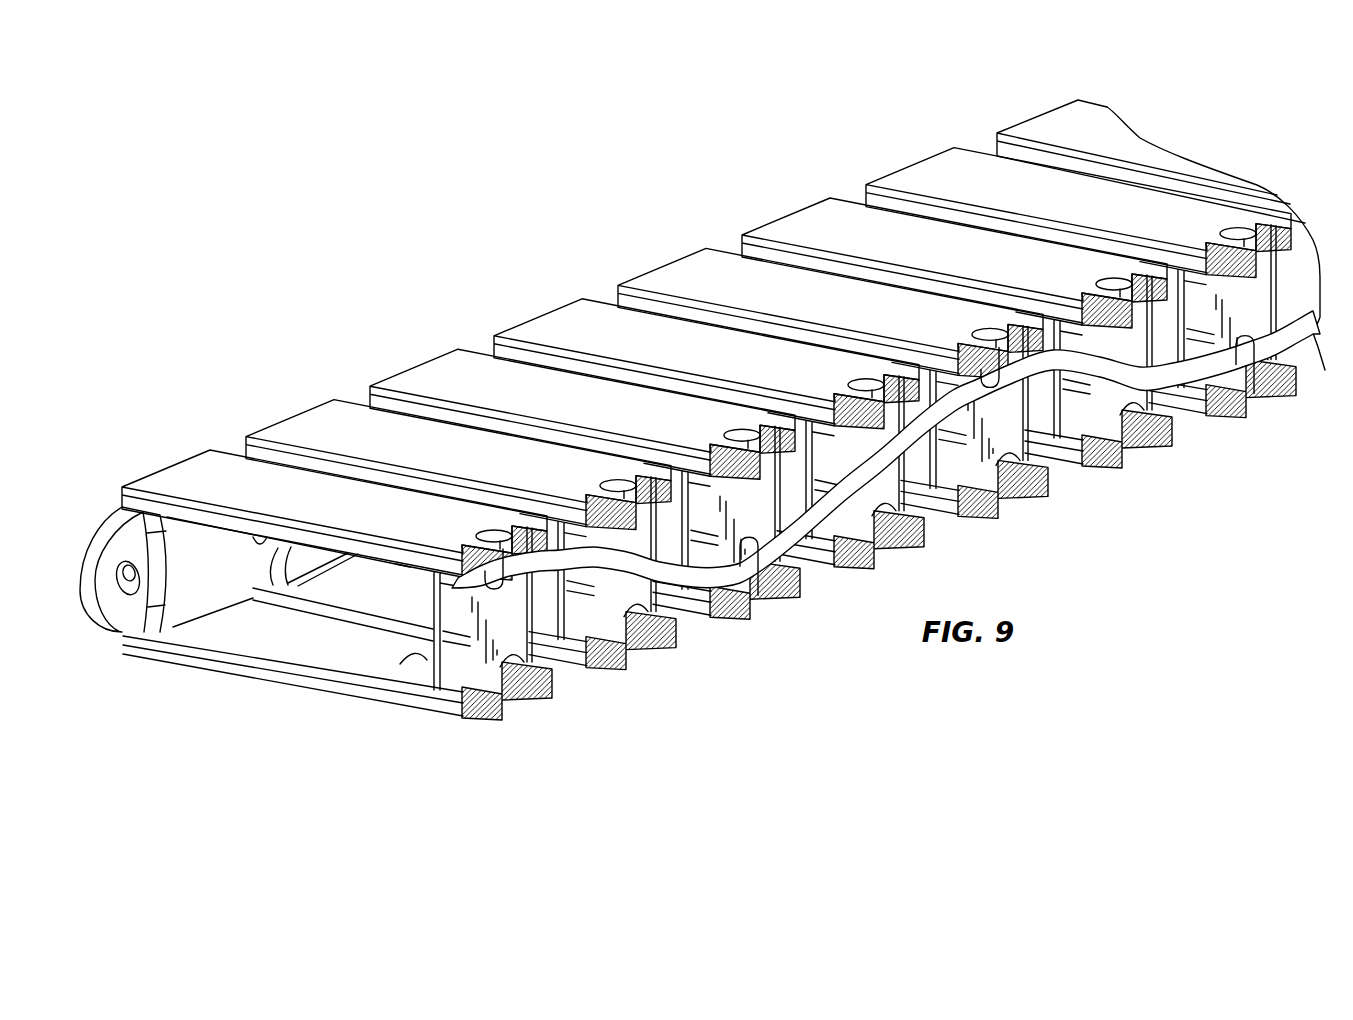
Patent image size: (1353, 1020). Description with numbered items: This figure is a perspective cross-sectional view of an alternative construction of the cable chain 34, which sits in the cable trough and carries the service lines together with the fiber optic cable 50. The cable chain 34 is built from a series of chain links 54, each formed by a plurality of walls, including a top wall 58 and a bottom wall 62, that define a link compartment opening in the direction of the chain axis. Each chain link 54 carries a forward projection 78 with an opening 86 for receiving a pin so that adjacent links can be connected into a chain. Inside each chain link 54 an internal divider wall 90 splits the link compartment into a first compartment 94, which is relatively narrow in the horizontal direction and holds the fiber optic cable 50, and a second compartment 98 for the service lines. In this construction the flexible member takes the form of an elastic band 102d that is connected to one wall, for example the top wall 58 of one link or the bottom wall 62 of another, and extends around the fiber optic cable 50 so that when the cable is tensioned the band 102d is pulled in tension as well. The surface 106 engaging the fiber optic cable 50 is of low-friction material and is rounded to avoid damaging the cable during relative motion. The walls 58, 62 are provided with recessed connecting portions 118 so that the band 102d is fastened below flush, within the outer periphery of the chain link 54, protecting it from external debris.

The cable chain 34 is at (691, 177).
The fiber optic cable 50 is at (891, 441).
The chain link 54 is at (429, 376).
The top wall 58 is at (470, 370).
The bottom wall 62 is at (228, 673).
The forward projection 78 is at (115, 608).
The opening 86 is at (128, 566).
The internal divider wall 90 is at (421, 672).
The first compartment 94 is at (506, 670).
The second compartment 98 is at (337, 657).
The elastic band 102d is at (468, 592).
The surface 106 is at (740, 560).
The recessed connecting portion 118 is at (490, 532).